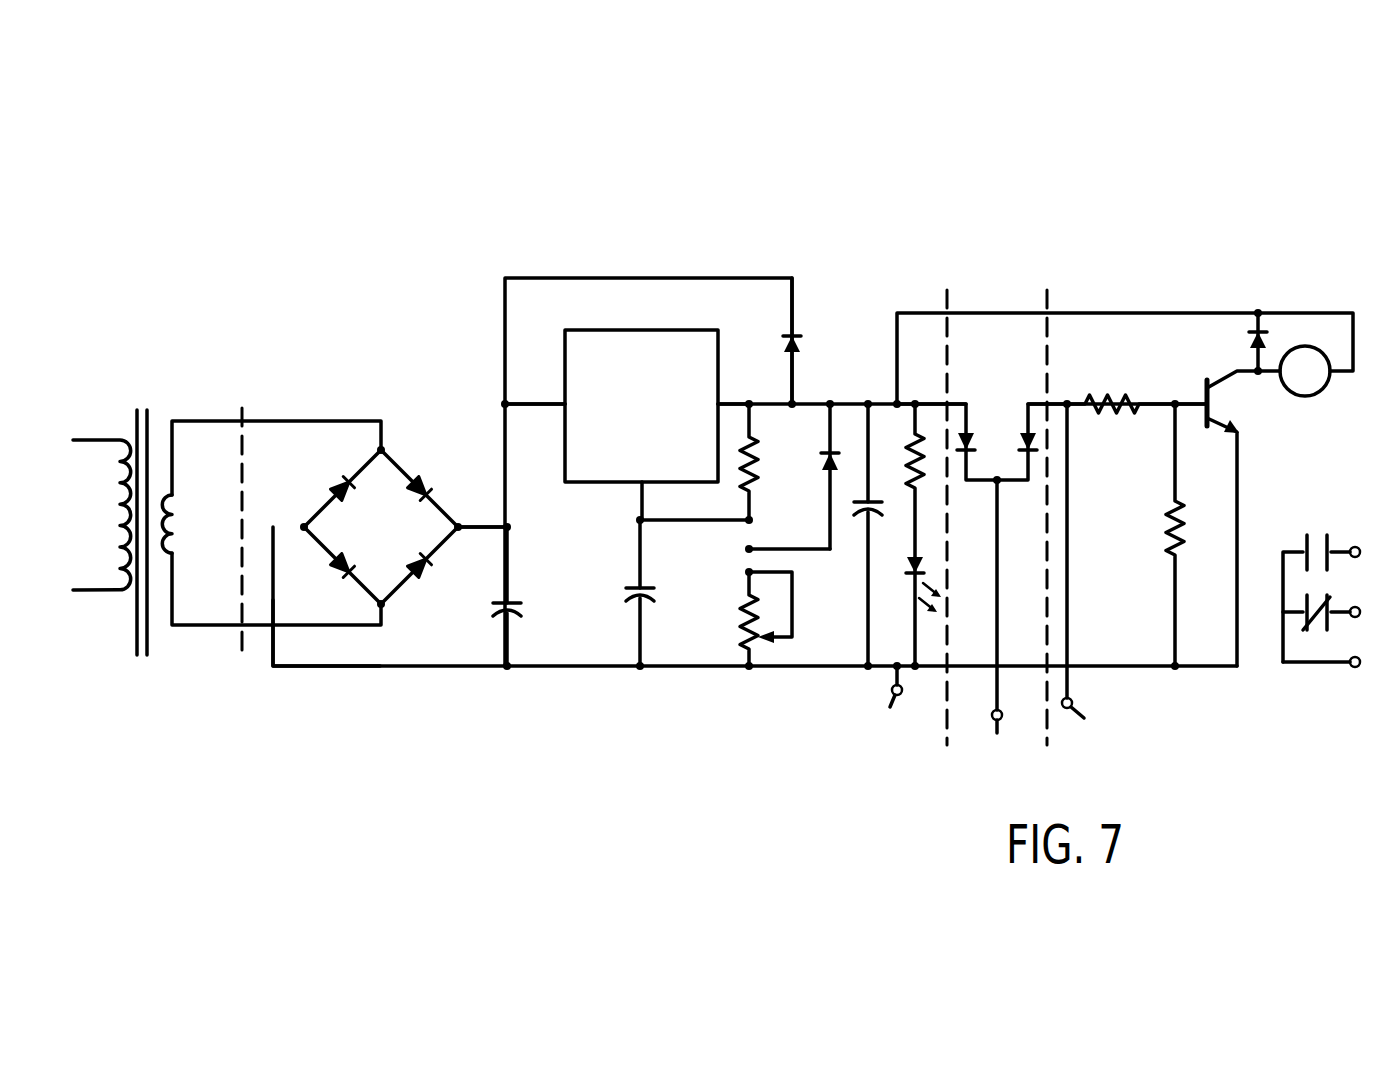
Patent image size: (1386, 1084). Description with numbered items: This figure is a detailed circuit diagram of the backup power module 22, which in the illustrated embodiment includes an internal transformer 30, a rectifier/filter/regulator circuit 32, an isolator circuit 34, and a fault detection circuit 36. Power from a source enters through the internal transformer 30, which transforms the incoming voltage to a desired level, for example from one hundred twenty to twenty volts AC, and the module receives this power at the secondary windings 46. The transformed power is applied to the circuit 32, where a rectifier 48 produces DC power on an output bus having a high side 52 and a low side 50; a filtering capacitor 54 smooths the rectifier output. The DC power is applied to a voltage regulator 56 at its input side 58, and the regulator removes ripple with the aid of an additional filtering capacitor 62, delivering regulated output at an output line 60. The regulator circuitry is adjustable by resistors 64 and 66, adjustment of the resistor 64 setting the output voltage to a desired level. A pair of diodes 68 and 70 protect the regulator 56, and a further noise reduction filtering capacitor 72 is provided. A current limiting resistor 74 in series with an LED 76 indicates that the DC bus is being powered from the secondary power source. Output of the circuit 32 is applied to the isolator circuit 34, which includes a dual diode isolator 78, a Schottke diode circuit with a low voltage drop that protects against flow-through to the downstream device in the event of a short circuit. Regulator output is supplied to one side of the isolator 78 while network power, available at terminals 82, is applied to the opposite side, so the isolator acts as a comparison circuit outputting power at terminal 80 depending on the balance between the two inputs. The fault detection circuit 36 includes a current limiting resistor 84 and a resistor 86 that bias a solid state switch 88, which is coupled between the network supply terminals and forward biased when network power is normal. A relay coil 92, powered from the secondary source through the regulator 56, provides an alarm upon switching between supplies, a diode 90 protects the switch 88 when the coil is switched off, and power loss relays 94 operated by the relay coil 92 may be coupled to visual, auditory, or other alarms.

The backup power module 22 is at (1036, 248).
The internal transformer 30 is at (138, 288).
The rectifier/filter/regulator circuit 32 is at (528, 208).
The isolator circuit 34 is at (993, 220).
The fault detection circuit 36 is at (1245, 220).
The secondary windings 46 is at (170, 540).
The rectifier 48 is at (393, 460).
The low side 50 is at (305, 668).
The high side 52 is at (482, 518).
The filtering capacitor 54 is at (498, 615).
The voltage regulator 56 is at (647, 328).
The input side 58 is at (527, 404).
The output line 60 is at (733, 402).
The additional filtering capacitor 62 is at (627, 590).
The resistor 64 is at (743, 610).
The resistor 66 is at (758, 460).
The diode 68 is at (823, 455).
The diode 70 is at (796, 334).
The noise reduction filtering capacitor 72 is at (870, 516).
The current limiting resistor 74 is at (908, 455).
The LED 76 is at (912, 578).
The dual diode isolator 78 is at (1000, 410).
The terminal 80 is at (997, 623).
The terminals 82 is at (987, 578).
The current limiting resistor 84 is at (1127, 393).
The resistor 86 is at (1180, 528).
The solid state switch 88 is at (1217, 407).
The diode 90 is at (1263, 343).
The relay coil 92 is at (1325, 388).
The power loss relays 94 is at (1352, 544).